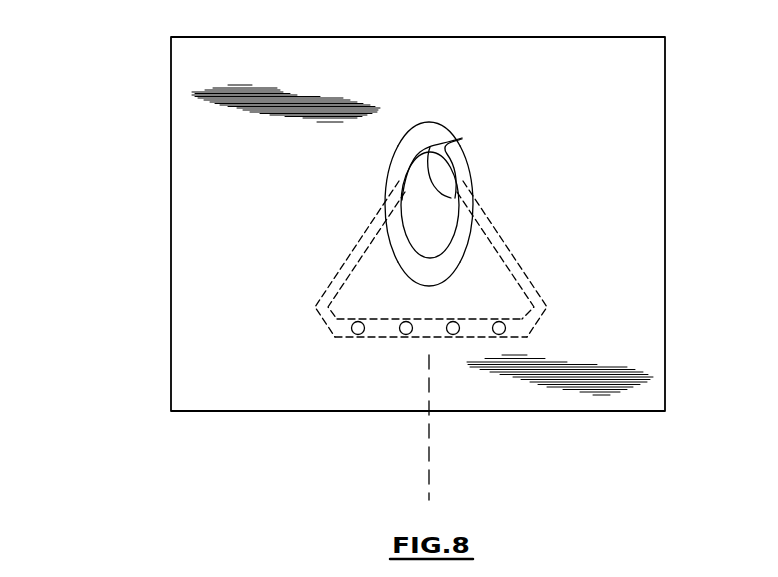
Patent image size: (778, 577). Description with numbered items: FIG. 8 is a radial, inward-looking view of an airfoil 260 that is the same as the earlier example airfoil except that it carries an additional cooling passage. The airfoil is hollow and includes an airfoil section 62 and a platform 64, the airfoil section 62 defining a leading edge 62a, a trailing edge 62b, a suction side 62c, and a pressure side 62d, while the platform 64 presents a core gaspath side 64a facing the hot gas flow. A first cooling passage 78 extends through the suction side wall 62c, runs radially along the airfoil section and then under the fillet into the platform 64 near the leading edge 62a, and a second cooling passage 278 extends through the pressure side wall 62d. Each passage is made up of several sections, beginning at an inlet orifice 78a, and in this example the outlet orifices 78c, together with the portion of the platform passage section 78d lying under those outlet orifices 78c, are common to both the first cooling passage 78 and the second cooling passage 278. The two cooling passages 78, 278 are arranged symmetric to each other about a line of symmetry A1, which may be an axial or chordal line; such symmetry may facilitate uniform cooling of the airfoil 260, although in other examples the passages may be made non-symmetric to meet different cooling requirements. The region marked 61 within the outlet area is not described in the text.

The airfoil 260 is at (147, 287).
The platform 64 is at (666, 113).
The core gaspath side 64a is at (622, 83).
The airfoil section 62 is at (426, 187).
The leading edge 62a is at (433, 288).
The trailing edge 62b is at (425, 121).
The suction side 62c is at (388, 175).
The pressure side 62d is at (473, 190).
The metering passage 61 is at (442, 233).
The cooling passage 78 is at (417, 257).
The inlet orifice 78a is at (462, 138).
The outlet orifice 78c is at (352, 337).
The platform passage section 78d is at (342, 280).
The second cooling passage 278 is at (522, 258).
The line of symmetry A1 is at (430, 463).